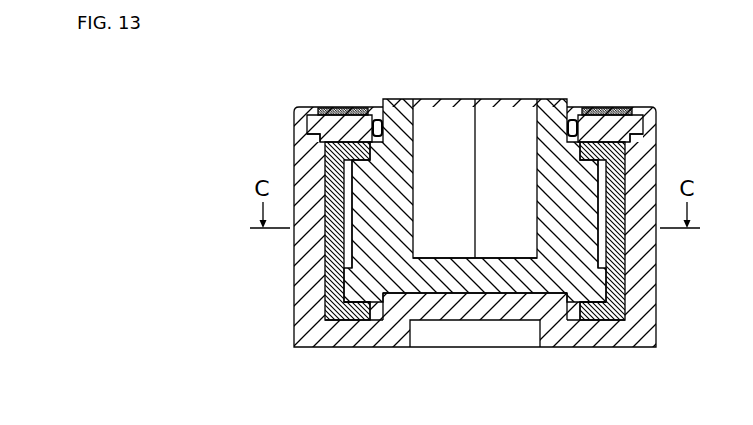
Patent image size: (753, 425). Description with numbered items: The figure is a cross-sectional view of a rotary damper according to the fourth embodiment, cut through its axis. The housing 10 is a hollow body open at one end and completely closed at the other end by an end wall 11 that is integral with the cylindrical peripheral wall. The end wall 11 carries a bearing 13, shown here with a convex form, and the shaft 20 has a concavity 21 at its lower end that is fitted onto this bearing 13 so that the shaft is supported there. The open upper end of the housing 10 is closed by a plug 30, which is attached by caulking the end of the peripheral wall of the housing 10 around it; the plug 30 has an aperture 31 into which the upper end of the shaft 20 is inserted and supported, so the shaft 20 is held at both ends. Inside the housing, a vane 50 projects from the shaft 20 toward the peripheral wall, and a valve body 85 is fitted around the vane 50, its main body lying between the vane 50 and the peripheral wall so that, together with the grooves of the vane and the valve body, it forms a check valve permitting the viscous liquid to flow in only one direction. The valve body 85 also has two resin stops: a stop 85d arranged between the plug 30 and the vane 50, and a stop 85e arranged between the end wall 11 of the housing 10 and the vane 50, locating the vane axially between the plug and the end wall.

The housing 10 is at (300, 248).
The end wall 11 is at (582, 340).
The bearing 13 is at (468, 317).
The shaft 20 is at (541, 100).
The concavity 21 is at (495, 300).
The plug 30 is at (620, 113).
The aperture 31 is at (384, 112).
The vane 50 is at (347, 180).
The valve body 85 is at (327, 277).
The stop 85d is at (345, 147).
The stop 85e is at (357, 317).